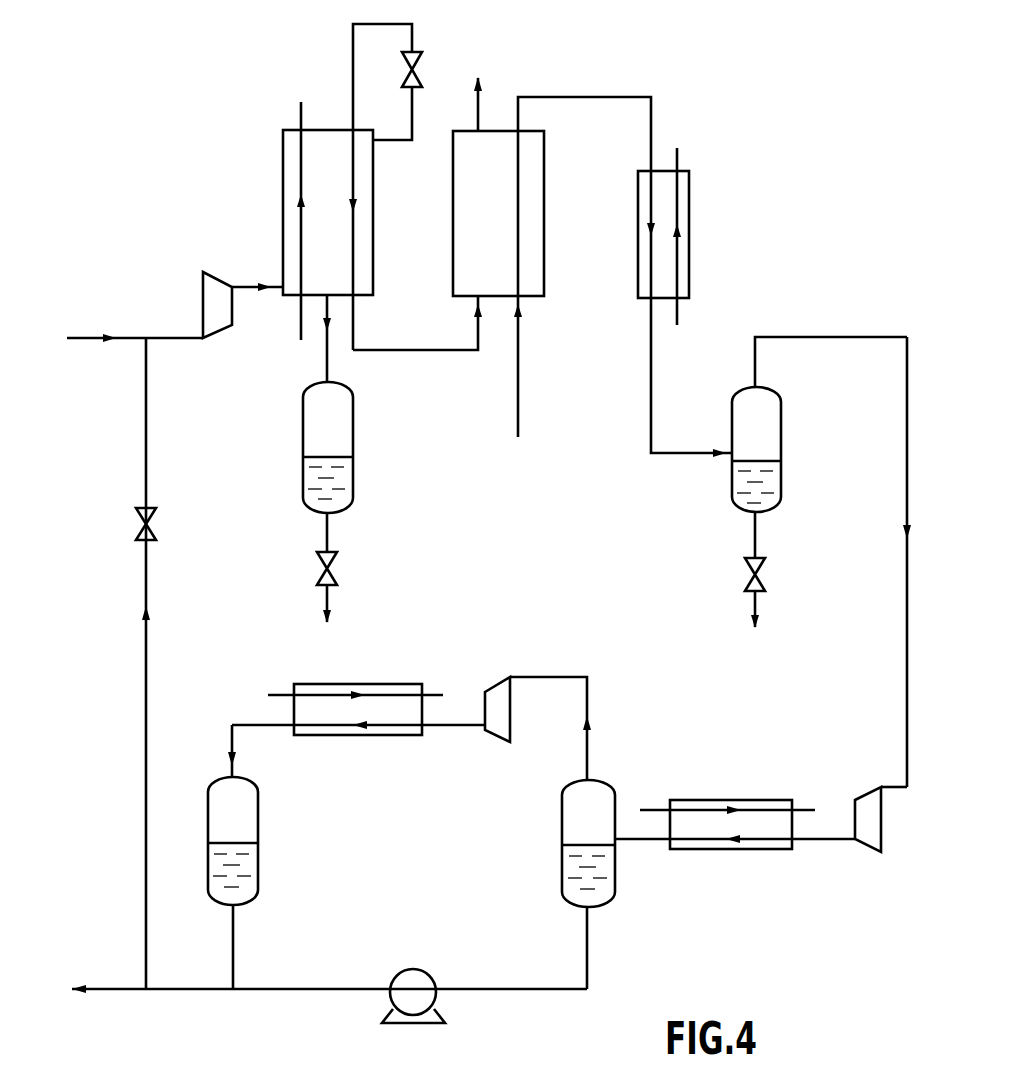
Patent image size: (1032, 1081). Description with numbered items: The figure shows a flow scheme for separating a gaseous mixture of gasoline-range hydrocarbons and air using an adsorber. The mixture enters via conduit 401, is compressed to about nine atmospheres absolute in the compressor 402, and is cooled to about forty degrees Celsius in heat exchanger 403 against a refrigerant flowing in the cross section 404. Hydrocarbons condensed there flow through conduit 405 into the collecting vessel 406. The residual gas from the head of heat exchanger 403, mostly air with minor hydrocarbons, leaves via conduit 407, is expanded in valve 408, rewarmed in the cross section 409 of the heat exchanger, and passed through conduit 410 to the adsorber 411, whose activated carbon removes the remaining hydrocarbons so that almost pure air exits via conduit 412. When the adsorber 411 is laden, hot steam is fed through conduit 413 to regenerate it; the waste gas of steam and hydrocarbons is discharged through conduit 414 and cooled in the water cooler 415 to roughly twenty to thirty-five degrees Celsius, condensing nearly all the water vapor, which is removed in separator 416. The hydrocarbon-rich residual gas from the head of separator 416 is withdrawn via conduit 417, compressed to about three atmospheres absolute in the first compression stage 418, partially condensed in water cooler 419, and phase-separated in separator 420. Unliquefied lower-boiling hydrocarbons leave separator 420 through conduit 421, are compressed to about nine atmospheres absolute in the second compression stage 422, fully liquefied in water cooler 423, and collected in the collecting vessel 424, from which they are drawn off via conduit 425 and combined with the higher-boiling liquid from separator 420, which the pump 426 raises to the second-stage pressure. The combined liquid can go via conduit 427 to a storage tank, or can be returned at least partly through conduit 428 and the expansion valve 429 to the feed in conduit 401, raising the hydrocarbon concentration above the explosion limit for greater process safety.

The conduit 401 is at (175, 334).
The compressor 402 is at (226, 308).
The heat exchanger 403 is at (290, 194).
The cross section 404 is at (301, 162).
The conduit 405 is at (325, 360).
The collecting vessel 406 is at (345, 442).
The conduit 407 is at (412, 133).
The valve 408 is at (420, 60).
The cross section 409 is at (353, 252).
The conduit 410 is at (432, 352).
The adsorber 411 is at (540, 190).
The conduit 412 is at (480, 118).
The conduit 413 is at (518, 373).
The conduit 414 is at (600, 97).
The water cooler 415 is at (689, 203).
The separator 416 is at (767, 432).
The conduit 417 is at (907, 632).
The first compression stage 418 is at (868, 840).
The water cooler 419 is at (766, 849).
The separator 420 is at (572, 825).
The conduit 421 is at (587, 700).
The second compression stage 422 is at (497, 735).
The water cooler 423 is at (388, 735).
The collecting vessel 424 is at (252, 829).
The conduit 425 is at (233, 945).
The pump 426 is at (425, 985).
The conduit 427 is at (116, 993).
The conduit 428 is at (146, 675).
The expansion valve 429 is at (156, 530).